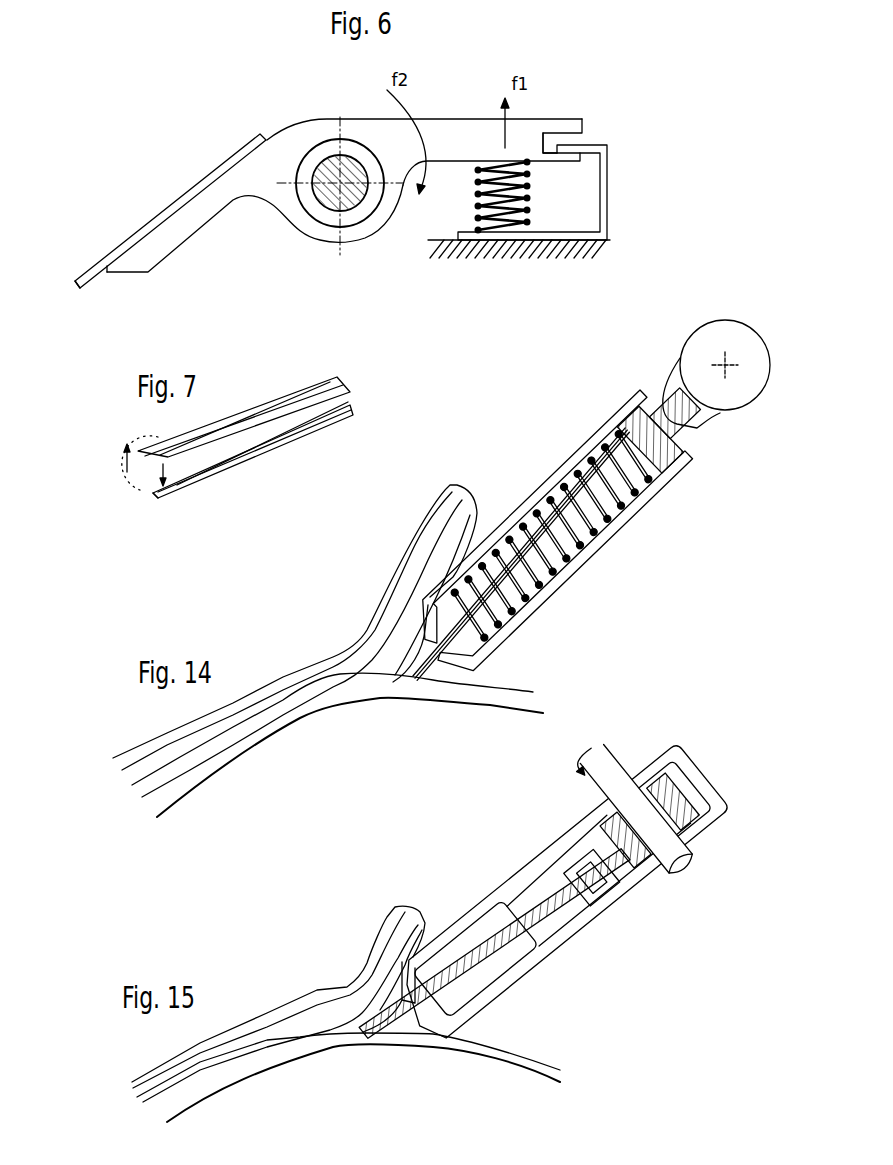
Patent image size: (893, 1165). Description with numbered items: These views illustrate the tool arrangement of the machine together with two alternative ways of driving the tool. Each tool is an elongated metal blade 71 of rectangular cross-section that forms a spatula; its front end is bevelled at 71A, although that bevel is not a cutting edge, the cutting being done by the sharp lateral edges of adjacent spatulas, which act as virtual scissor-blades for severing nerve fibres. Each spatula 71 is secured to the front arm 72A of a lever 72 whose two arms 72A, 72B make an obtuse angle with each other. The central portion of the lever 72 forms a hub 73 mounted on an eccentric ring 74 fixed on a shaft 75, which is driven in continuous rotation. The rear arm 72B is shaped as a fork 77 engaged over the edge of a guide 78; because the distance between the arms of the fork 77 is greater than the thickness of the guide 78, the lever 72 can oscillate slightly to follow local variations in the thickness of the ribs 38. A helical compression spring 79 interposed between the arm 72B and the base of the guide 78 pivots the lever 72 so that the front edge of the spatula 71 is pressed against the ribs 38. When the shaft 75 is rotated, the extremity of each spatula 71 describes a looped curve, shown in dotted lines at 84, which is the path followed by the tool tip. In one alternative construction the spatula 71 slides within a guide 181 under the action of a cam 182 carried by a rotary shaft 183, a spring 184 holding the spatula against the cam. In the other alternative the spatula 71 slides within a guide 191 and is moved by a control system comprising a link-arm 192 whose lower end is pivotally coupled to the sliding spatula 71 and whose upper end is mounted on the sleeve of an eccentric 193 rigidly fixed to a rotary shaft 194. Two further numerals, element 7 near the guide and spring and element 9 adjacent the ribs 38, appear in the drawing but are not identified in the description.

In FIG. 6, the support surface 7 is at (597, 250).
In FIG. 14, the fibre bundle / body 9 is at (273, 685).
In FIG. 15, the fibre bundle / body 9 is at (267, 1025).
In FIG. 14, the ribs 38 is at (369, 702).
In FIG. 15, the ribs 38 is at (311, 1053).
In FIG. 6, the spatula 71 is at (162, 222).
In FIG. 7, the spatula 71 is at (280, 410).
In FIG. 14, the spatula 71 is at (513, 605).
In FIG. 15, the spatula 71 is at (472, 962).
In FIG. 6, the bevelled front end 71A is at (81, 288).
In FIG. 7, the bevelled front end 71A is at (173, 500).
In FIG. 6, the lever 72 is at (322, 110).
In FIG. 6, the front arm 72A is at (177, 230).
In FIG. 6, the rear arm 72B is at (453, 137).
In FIG. 6, the hub 73 is at (352, 232).
In FIG. 6, the eccentric ring 74 is at (313, 202).
In FIG. 6, the shaft 75 is at (353, 197).
In FIG. 6, the fork 77 is at (568, 127).
In FIG. 6, the guide 78 is at (620, 181).
In FIG. 6, the helical compression spring 79 is at (523, 205).
In FIG. 7, the curve 84 is at (132, 477).
In FIG. 14, the guide 181 is at (577, 567).
In FIG. 14, the cam 182 is at (692, 408).
In FIG. 14, the rotary shaft 183 is at (738, 345).
In FIG. 14, the spring 184 is at (593, 530).
In FIG. 15, the guide 191 is at (549, 939).
In FIG. 15, the link-arm 192 is at (603, 843).
In FIG. 15, the eccentric 193 is at (673, 833).
In FIG. 15, the rotary shaft 194 is at (673, 876).